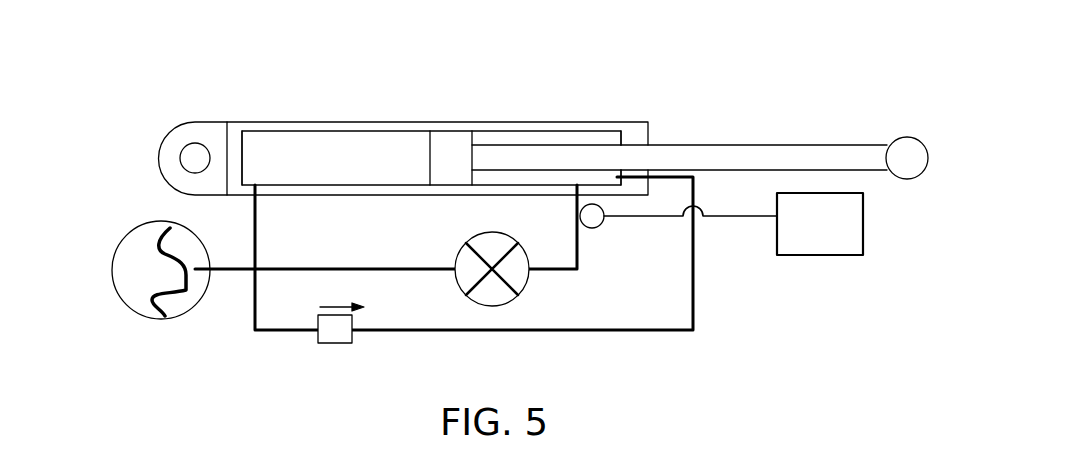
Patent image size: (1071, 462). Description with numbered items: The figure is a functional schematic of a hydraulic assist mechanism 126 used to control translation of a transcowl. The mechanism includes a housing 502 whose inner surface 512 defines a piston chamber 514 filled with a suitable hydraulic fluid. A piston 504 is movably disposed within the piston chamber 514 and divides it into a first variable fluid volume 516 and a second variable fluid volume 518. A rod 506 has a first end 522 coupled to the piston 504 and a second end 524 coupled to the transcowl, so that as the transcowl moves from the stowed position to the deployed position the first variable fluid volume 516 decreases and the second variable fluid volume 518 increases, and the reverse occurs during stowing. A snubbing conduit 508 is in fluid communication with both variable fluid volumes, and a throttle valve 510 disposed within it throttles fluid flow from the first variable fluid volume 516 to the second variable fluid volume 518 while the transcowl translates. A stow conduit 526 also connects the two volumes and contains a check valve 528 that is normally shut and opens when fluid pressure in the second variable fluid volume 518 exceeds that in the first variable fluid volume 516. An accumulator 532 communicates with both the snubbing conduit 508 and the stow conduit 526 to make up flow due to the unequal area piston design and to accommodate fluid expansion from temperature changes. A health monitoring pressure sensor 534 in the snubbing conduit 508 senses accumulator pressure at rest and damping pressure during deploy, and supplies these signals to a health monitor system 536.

The hydraulic assist mechanism 126 is at (135, 82).
The housing 502 is at (382, 122).
The piston 504 is at (452, 143).
The rod 506 is at (750, 145).
The snubbing conduit 508 is at (547, 272).
The throttle valve 510 is at (456, 252).
The inner surface 512 is at (268, 133).
The piston chamber 514 is at (300, 151).
The first variable fluid volume 516 is at (597, 138).
The second variable fluid volume 518 is at (250, 132).
The first end 522 is at (473, 166).
The second end 524 is at (910, 152).
The stow conduit 526 is at (637, 330).
The check valve 528 is at (332, 343).
The accumulator 532 is at (112, 268).
The health monitoring pressure sensor 534 is at (604, 222).
The health monitor system 536 is at (863, 225).